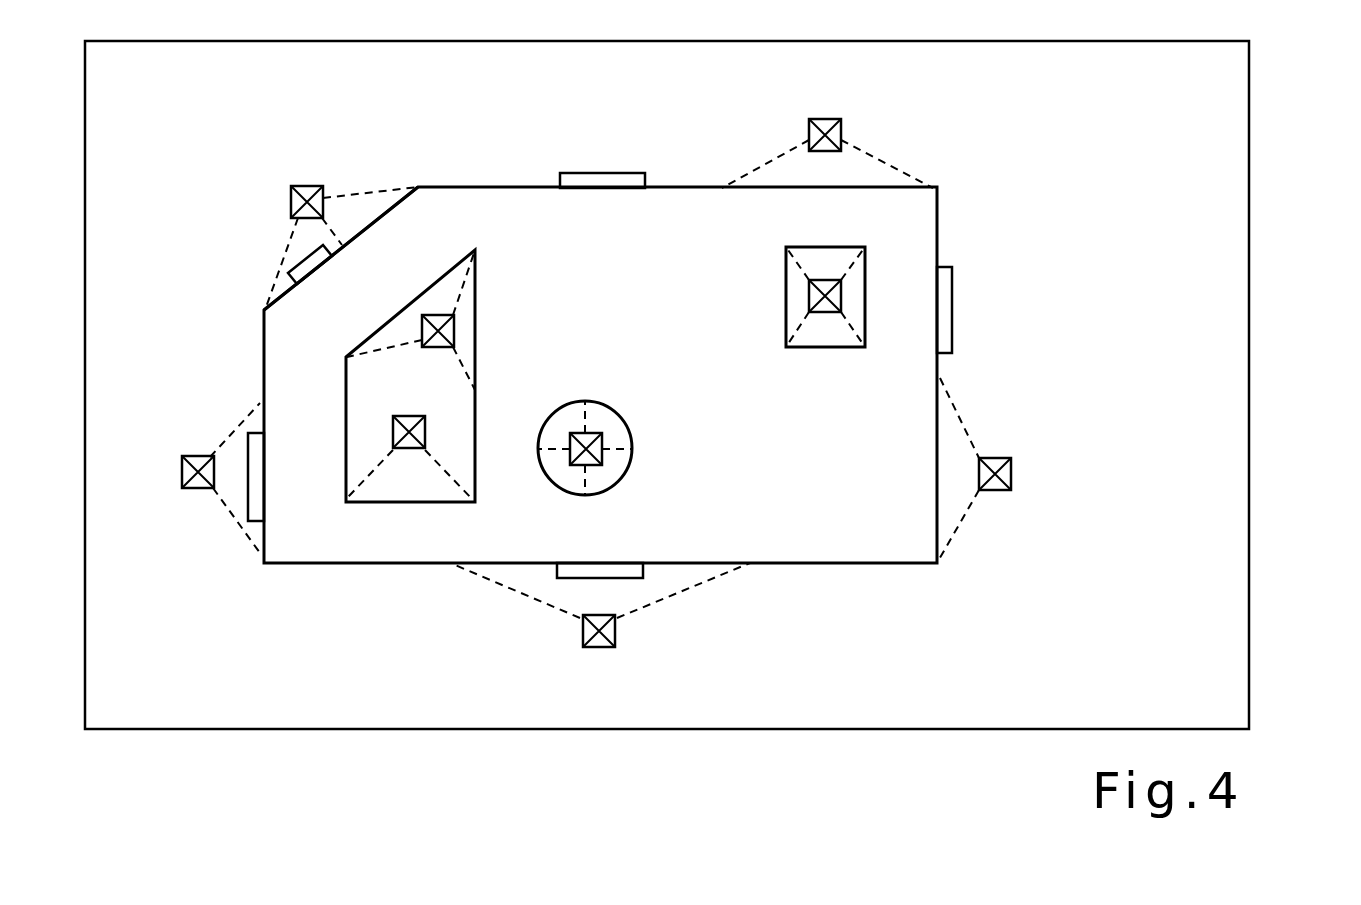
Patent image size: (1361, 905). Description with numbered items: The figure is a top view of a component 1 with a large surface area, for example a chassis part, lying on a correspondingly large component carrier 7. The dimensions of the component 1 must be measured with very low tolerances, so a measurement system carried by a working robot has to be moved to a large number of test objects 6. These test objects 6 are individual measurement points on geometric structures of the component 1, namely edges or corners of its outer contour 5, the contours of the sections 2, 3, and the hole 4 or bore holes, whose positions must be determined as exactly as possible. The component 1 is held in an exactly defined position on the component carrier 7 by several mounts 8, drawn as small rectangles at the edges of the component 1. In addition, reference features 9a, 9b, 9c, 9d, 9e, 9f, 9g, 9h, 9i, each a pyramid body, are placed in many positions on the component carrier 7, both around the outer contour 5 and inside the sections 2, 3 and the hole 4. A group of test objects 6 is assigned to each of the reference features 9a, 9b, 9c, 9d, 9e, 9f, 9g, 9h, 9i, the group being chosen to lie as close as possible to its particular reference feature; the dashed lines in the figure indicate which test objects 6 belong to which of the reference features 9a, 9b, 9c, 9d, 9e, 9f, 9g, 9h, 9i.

The component 1 is at (487, 205).
The section 2 is at (387, 490).
The section 3 is at (790, 285).
The hole 4 is at (615, 480).
The outer contour 5 is at (264, 350).
The test object 6 is at (418, 187).
The component carrier 7 is at (1223, 262).
The mount 8 is at (575, 178).
The reference feature 9a is at (840, 135).
The reference feature 9b is at (1011, 490).
The reference feature 9c is at (585, 630).
The reference feature 9d is at (197, 487).
The reference feature 9e is at (307, 186).
The reference feature 9f is at (393, 432).
The reference feature 9g is at (453, 330).
The reference feature 9h is at (840, 296).
The reference feature 9i is at (600, 449).